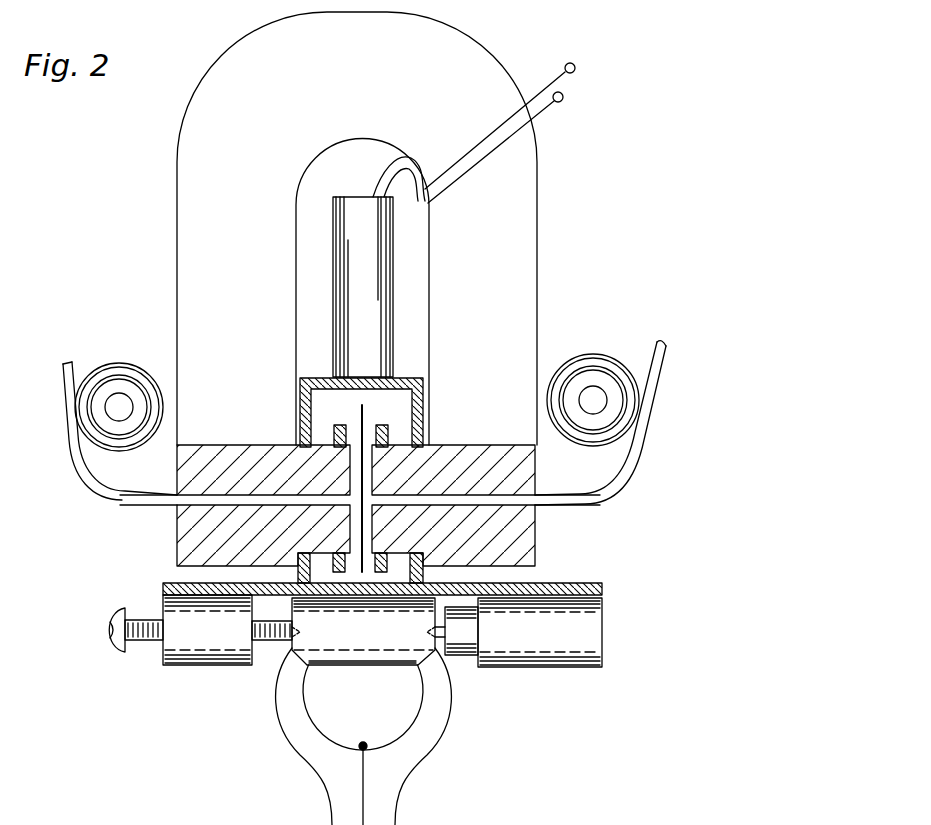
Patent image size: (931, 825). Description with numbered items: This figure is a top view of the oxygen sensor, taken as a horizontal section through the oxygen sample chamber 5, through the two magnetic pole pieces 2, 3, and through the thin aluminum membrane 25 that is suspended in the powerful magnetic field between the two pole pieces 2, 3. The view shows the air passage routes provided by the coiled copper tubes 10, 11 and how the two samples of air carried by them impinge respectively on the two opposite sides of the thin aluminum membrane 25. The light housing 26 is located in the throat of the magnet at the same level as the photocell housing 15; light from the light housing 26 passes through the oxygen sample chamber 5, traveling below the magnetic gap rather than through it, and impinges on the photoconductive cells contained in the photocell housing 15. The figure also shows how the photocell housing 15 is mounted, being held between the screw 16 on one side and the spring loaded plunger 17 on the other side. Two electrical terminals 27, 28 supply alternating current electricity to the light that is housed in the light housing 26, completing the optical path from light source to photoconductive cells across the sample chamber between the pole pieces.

The magnetic pole piece 2 is at (184, 549).
The magnetic pole piece 3 is at (518, 531).
The oxygen sample chamber 5 is at (397, 424).
The coiled copper tube 10 is at (92, 482).
The coiled copper tube 11 is at (630, 457).
The photocell housing 15 is at (345, 636).
The screw 16 is at (116, 650).
The spring loaded plunger 17 is at (466, 638).
The thin aluminum membrane 25 is at (362, 430).
The light housing 26 is at (365, 294).
The electrical terminal 27 is at (521, 121).
The electrical terminal 28 is at (518, 143).